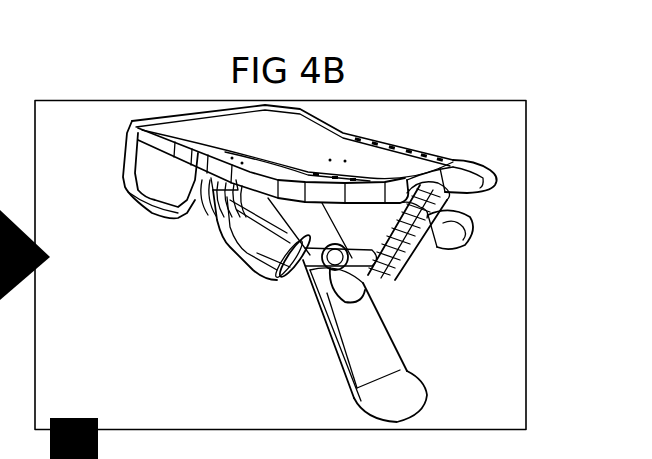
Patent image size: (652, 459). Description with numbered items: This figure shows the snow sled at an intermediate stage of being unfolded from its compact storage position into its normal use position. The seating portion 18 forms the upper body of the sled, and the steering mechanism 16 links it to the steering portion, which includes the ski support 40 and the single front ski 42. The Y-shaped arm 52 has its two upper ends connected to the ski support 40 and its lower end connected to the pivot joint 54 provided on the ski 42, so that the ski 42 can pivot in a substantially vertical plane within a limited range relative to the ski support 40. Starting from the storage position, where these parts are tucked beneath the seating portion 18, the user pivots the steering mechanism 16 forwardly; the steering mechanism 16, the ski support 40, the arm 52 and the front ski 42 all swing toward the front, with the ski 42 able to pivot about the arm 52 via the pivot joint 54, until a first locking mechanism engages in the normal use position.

The seating portion 18 is at (336, 148).
The steering mechanism 16 is at (457, 160).
The ski support 40 is at (480, 195).
The Y-shaped arm 52 is at (433, 250).
The ski 42 is at (383, 311).
The pivot joint 54 is at (340, 278).